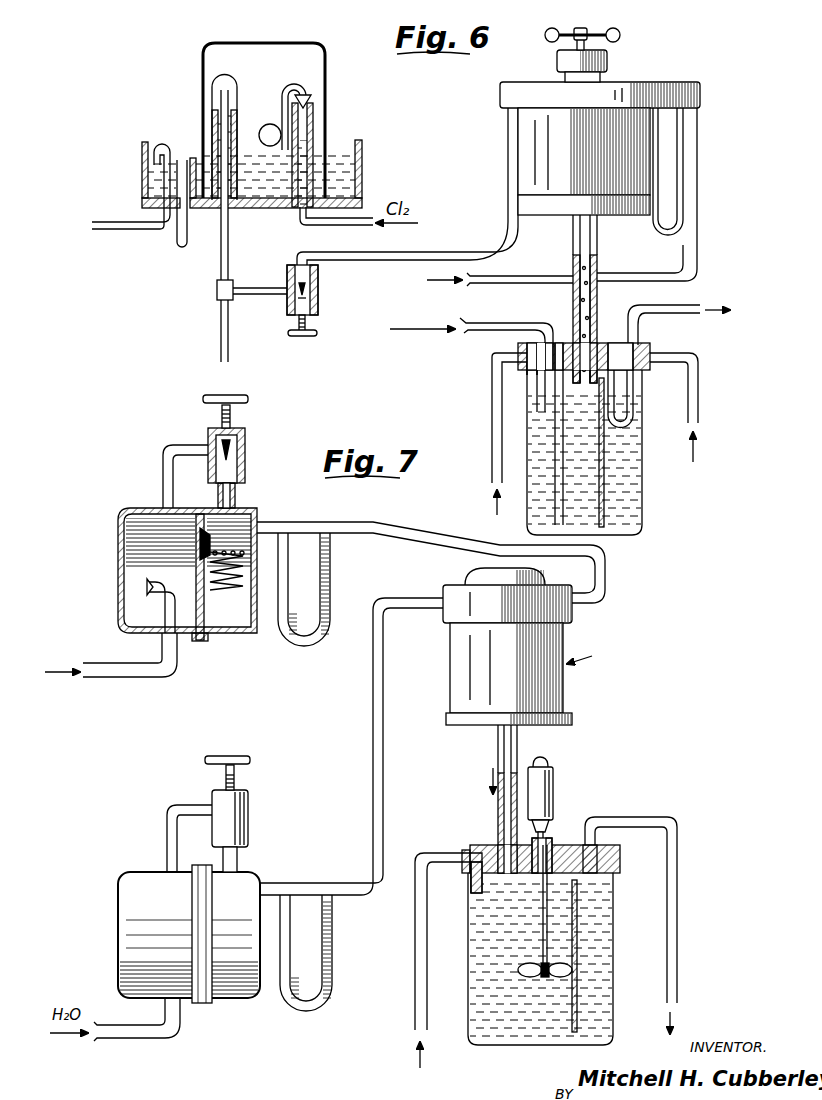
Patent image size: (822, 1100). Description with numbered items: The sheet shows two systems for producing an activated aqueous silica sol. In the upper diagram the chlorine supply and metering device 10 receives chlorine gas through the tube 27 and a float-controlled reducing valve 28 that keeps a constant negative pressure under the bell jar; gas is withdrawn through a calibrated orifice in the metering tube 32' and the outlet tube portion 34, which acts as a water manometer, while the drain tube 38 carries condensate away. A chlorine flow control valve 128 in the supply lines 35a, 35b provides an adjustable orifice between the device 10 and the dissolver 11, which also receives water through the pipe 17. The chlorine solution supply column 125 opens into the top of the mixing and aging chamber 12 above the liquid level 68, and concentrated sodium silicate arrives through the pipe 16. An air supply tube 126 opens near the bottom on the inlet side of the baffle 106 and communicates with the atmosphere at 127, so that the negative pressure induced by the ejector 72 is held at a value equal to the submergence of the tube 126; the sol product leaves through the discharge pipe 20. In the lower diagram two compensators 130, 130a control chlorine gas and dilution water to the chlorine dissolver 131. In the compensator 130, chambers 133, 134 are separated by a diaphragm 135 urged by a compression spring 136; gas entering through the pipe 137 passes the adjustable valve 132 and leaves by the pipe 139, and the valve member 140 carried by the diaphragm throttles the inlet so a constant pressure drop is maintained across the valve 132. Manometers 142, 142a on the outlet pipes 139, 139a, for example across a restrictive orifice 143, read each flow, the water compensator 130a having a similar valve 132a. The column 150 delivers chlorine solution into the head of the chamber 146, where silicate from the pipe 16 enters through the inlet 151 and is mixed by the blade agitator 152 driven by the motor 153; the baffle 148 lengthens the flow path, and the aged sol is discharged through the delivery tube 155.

In FIG. 6, the chlorine supply and metering device 10 is at (199, 72).
In FIG. 6, the inner tube 32' is at (238, 109).
In FIG. 6, the float-controlled reducing valve 28 is at (312, 87).
In FIG. 6, the chlorine supply tube 27 is at (298, 219).
In FIG. 6, the chlorine outlet tube portion 34 is at (218, 266).
In FIG. 6, the chlorine supply line 35a is at (258, 287).
In FIG. 6, the drain tube 38 is at (220, 328).
In FIG. 6, the chlorine flow control valve 128 is at (320, 298).
In FIG. 6, the dissolver 11 is at (497, 93).
In FIG. 6, the chlorine supply line 35b is at (506, 232).
In FIG. 6, the chlorine solution supply column 125 is at (598, 243).
In FIG. 6, the water pipe 17 is at (563, 275).
In FIG. 6, the discharge pipe 20 is at (701, 304).
In FIG. 6, the atmospheric opening 127 is at (467, 336).
In FIG. 6, the silicate delivery pipe 16 is at (491, 456).
In FIG. 7, the silicate delivery pipe 16 is at (413, 982).
In FIG. 6, the liquid level 68 is at (565, 410).
In FIG. 6, the ejector 72 is at (634, 404).
In FIG. 6, the baffle 106 is at (604, 503).
In FIG. 6, the air supply tube 126 is at (556, 507).
In FIG. 6, the mixing and aging chamber 12 is at (636, 534).
In FIG. 7, the compensator 130 is at (116, 531).
In FIG. 7, the flow control valve 132 is at (243, 447).
In FIG. 7, the diaphragm 135 is at (208, 533).
In FIG. 7, the outlet pipe 139 is at (270, 523).
In FIG. 7, the restrictive orifice 143 is at (310, 540).
In FIG. 7, the valve member 140 is at (140, 590).
In FIG. 7, the inlet chamber 133 is at (132, 610).
In FIG. 7, the compression spring 136 is at (225, 587).
In FIG. 7, the outlet chamber 134 is at (230, 628).
In FIG. 7, the manometer 142 is at (294, 647).
In FIG. 7, the inlet pipe 137 is at (98, 682).
In FIG. 7, the chlorine dissolver 131 is at (565, 698).
In FIG. 7, the column 150 is at (499, 751).
In FIG. 7, the motor 153 is at (557, 788).
In FIG. 7, the delivery tube 155 is at (673, 819).
In FIG. 7, the silicate inlet 151 is at (472, 891).
In FIG. 7, the mechanical agitator 152 is at (520, 971).
In FIG. 7, the mixing and aging chamber 146 is at (468, 1000).
In FIG. 7, the baffle 148 is at (578, 993).
In FIG. 7, the flow control valve 132a is at (241, 813).
In FIG. 7, the water compensator 130a is at (123, 935).
In FIG. 7, the water outlet pipe 139a is at (271, 883).
In FIG. 7, the manometer 142a is at (300, 1010).